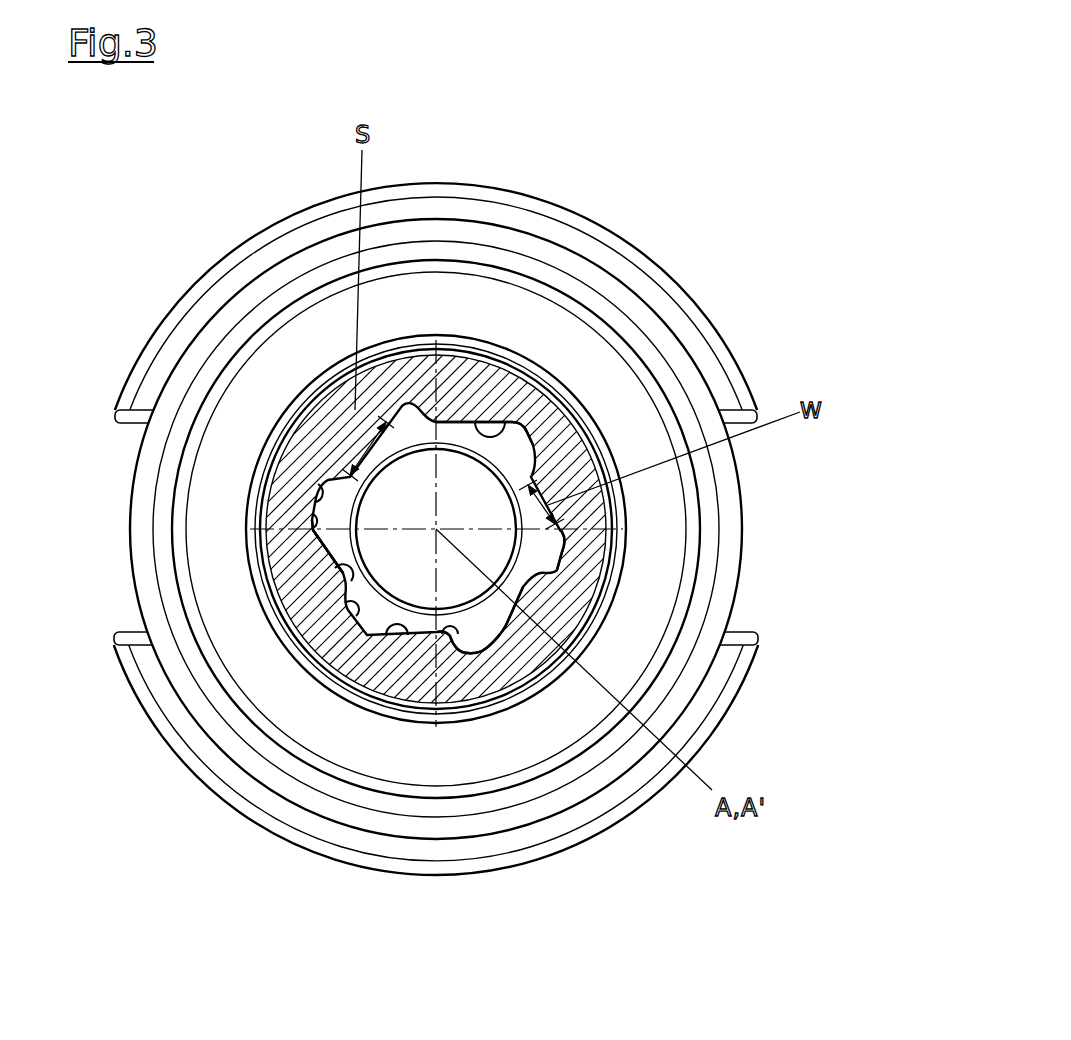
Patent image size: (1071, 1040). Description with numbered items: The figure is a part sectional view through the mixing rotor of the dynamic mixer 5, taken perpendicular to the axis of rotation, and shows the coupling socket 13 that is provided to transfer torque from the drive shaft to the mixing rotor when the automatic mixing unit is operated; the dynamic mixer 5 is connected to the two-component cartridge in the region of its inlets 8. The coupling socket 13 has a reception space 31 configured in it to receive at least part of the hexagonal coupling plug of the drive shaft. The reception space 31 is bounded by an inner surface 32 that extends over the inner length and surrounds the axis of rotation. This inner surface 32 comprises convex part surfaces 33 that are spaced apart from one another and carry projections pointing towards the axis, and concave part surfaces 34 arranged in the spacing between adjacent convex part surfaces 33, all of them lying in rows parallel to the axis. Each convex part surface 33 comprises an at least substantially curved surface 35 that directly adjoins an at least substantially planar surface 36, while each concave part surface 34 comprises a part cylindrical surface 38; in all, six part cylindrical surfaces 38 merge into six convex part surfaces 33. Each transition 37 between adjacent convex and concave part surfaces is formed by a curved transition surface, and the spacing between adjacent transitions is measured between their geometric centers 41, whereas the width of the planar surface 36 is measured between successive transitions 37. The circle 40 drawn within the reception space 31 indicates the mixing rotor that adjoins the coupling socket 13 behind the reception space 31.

The dynamic mixer 5 is at (214, 185).
The inlet 8 is at (437, 529).
The coupling socket 13 is at (465, 410).
The reception space 31 is at (437, 405).
The inner surface 32 is at (545, 395).
The convex part surface 33 is at (545, 458).
The concave part surface 34 is at (568, 555).
The curved surface 35 is at (340, 575).
The planar surface 36 is at (318, 545).
The transition 37 is at (327, 482).
The part cylindrical surface 38 is at (322, 490).
The circle 40 is at (590, 385).
The geometric center 41 is at (403, 432).